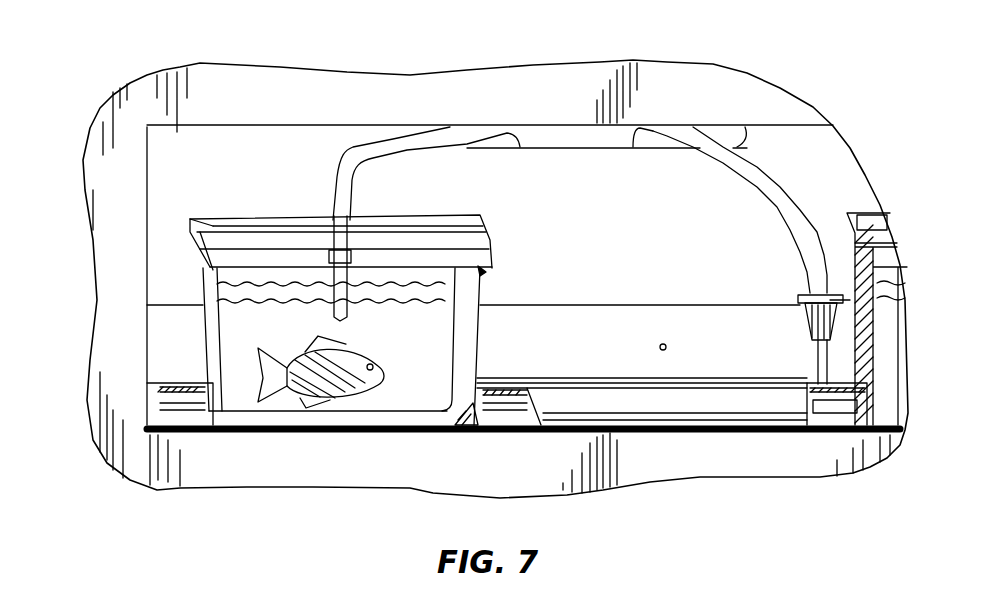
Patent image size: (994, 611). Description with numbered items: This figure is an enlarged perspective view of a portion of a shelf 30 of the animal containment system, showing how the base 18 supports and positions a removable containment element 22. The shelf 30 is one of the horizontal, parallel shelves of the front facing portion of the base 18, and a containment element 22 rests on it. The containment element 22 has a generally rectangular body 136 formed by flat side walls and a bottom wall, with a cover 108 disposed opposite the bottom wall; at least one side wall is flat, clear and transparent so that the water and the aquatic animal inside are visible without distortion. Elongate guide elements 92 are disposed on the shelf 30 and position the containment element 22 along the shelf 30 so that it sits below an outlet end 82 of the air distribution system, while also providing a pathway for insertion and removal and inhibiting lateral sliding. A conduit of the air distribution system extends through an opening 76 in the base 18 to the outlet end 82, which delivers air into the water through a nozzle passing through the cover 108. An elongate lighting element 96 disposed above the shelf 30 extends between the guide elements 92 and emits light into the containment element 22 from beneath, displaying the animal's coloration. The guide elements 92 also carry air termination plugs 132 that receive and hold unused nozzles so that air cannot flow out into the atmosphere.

The base 18 is at (192, 150).
The containment element 22 is at (483, 269).
The shelf 30 is at (258, 467).
The opening 76 is at (590, 150).
The outlet end 82 is at (420, 153).
The guide element 92 is at (177, 380).
The lighting element 96 is at (703, 424).
The cover 108 is at (294, 249).
The air termination plug 132 is at (187, 380).
The body 136 is at (417, 408).